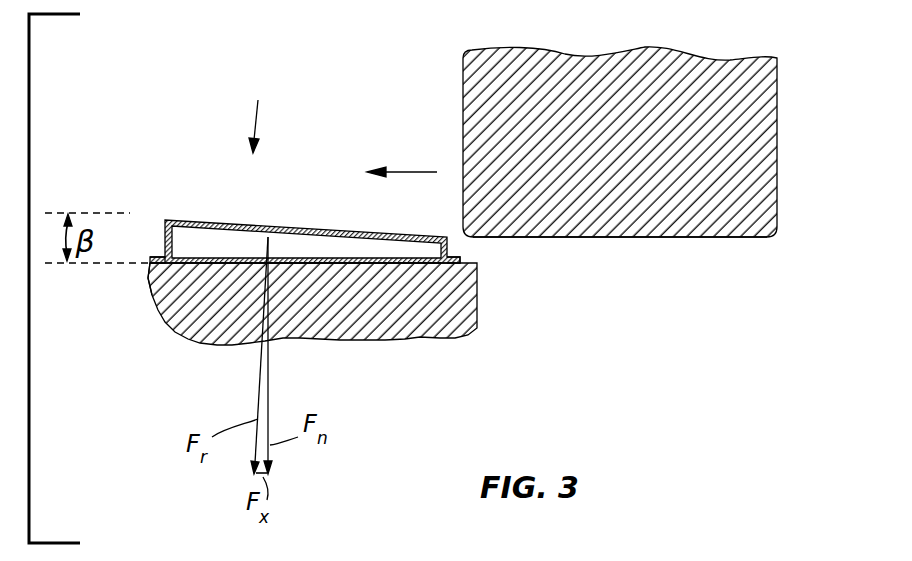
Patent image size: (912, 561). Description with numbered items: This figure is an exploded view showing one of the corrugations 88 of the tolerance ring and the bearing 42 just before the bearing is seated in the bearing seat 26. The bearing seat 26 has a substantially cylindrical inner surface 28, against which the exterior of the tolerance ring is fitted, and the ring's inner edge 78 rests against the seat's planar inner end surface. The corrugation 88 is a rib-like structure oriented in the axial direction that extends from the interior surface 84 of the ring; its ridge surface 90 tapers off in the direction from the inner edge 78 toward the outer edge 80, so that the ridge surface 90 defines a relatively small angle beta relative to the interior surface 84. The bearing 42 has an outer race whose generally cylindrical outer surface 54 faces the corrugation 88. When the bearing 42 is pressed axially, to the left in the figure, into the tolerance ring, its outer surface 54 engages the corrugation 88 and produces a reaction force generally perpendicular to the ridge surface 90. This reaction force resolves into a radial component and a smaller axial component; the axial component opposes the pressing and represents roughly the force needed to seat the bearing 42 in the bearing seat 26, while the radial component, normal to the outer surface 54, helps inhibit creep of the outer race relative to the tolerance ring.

The bearing seat 26 is at (453, 322).
The inner surface 28 is at (222, 263).
The left bearing 42 is at (760, 170).
The outer surface 54 is at (658, 237).
The inner edge 78 is at (148, 263).
The outer edge 80 is at (457, 259).
The interior surface 84 is at (159, 257).
The corrugations 88 is at (261, 112).
The ridge surface 90 is at (288, 225).